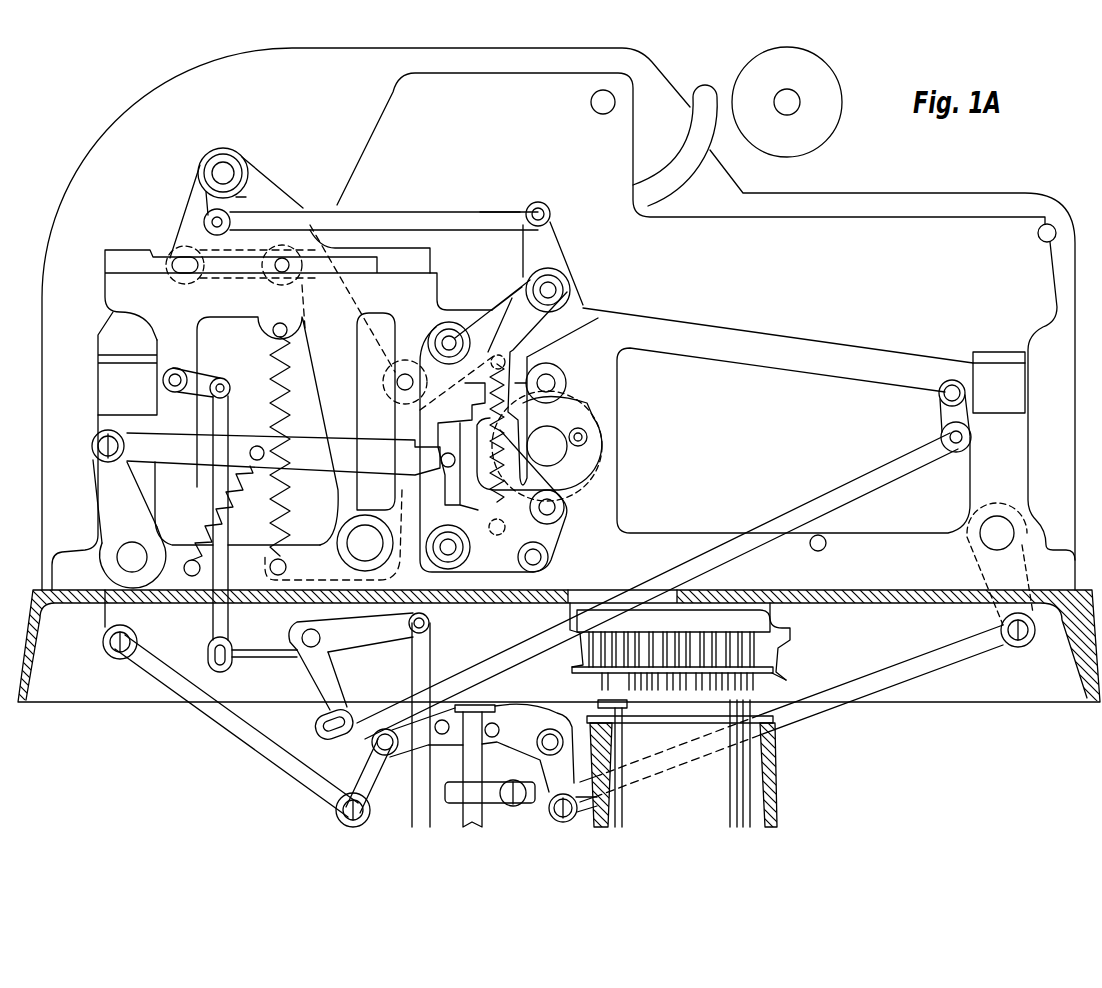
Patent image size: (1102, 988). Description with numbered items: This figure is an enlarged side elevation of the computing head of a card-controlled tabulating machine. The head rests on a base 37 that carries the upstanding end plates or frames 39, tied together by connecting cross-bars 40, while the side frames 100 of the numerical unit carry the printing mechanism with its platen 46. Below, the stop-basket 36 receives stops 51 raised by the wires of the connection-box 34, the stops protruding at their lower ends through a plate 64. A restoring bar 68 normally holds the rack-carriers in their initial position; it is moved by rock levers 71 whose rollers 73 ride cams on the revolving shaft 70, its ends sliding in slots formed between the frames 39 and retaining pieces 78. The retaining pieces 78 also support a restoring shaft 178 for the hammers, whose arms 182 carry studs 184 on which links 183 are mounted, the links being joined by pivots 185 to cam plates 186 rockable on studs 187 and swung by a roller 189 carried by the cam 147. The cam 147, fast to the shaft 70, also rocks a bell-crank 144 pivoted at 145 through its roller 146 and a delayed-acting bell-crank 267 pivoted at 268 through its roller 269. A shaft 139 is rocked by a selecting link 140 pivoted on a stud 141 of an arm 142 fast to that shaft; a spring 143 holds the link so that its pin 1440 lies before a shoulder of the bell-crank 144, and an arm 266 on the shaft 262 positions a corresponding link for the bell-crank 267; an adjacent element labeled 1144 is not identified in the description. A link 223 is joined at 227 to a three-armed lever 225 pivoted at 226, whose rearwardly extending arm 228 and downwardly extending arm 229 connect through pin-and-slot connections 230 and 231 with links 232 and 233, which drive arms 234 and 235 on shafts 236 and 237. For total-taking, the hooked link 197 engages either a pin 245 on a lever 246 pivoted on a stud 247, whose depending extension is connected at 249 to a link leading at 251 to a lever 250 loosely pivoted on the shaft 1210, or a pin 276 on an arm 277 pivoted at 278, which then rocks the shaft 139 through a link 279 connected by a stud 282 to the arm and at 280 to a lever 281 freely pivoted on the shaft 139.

The side frame 100 is at (385, 100).
The base 37 is at (1027, 702).
The connecting cross-bar 40 is at (98, 392).
The restoring shaft 178 is at (228, 168).
The retaining piece 78 is at (190, 190).
The restoring bar 68 is at (178, 260).
The arm 182 is at (256, 199).
The stud 184 is at (223, 222).
The link 183 is at (500, 212).
The pivot 185 is at (551, 214).
The cam plate 186 is at (556, 251).
The stud 187 is at (555, 290).
The platen 46 is at (823, 128).
The end plate 39 is at (803, 342).
The shaft 236 is at (163, 381).
The arm 234 is at (208, 378).
The link 232 is at (229, 405).
The pin and slot connection 230 is at (208, 658).
The selecting link 140 is at (338, 441).
The stud 141 is at (91, 445).
The arm 142 is at (99, 488).
The shaft 139 is at (120, 552).
The spring 143 is at (207, 525).
The lever 281 is at (105, 622).
The rock lever 71 is at (365, 336).
The roller 73 is at (394, 364).
The pivot 268 is at (485, 312).
The pawl 1144 is at (480, 408).
The pin 1440 is at (440, 460).
The bell-crank 267 is at (558, 368).
The roller 269 is at (557, 383).
The cam 147 is at (560, 402).
The revolving shaft 70 is at (570, 440).
The roller 189 is at (588, 438).
The roller 146 is at (566, 508).
The arm 266 is at (550, 556).
The shaft 262 is at (548, 562).
The bell-crank 144 is at (470, 560).
The pivot 145 is at (392, 570).
The shaft 237 is at (939, 397).
The arm 235 is at (944, 422).
The link 233 is at (896, 456).
The shaft 1210 is at (988, 525).
The pivot 280 is at (102, 646).
The link 279 is at (130, 678).
The stud 282 is at (336, 811).
The pivot 226 is at (301, 634).
The three-armed lever 225 is at (340, 630).
The connection 227 is at (431, 624).
The rearwardly extending arm 228 is at (256, 653).
The link 223 is at (412, 661).
The downwardly extending arm 229 is at (322, 690).
The pin and slot connection 231 is at (318, 724).
The pivot 278 is at (372, 747).
The arm 277 is at (375, 792).
The pin 245 is at (496, 745).
The pin 276 is at (465, 707).
The link 197 is at (470, 770).
The lever 246 is at (545, 697).
The stud 247 is at (553, 728).
The pivot 249 is at (548, 812).
The lever 250 is at (1000, 621).
The connection 251 is at (1026, 641).
The stop-basket 36 is at (789, 641).
The plate 64 is at (774, 676).
The stop 51 is at (752, 680).
The connection-box 34 is at (778, 771).